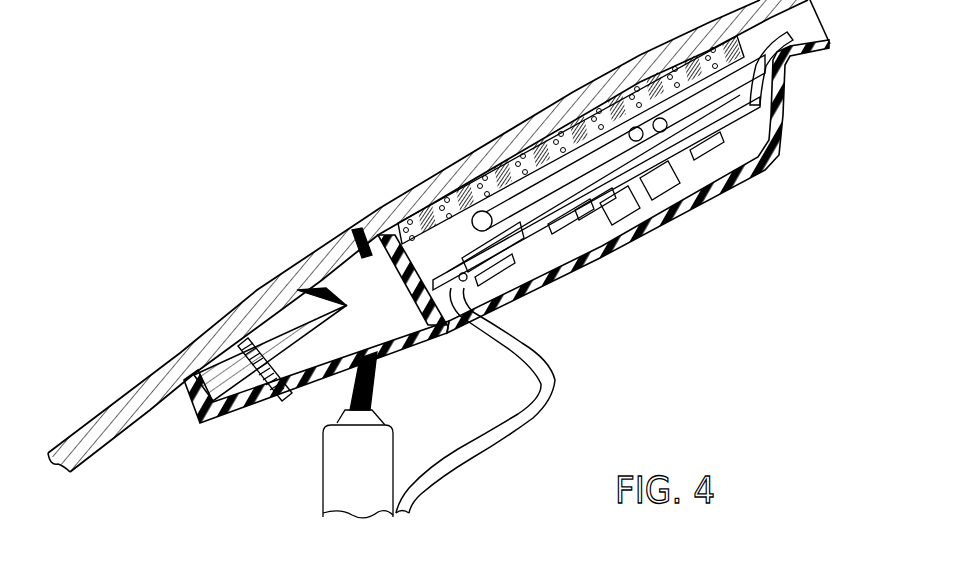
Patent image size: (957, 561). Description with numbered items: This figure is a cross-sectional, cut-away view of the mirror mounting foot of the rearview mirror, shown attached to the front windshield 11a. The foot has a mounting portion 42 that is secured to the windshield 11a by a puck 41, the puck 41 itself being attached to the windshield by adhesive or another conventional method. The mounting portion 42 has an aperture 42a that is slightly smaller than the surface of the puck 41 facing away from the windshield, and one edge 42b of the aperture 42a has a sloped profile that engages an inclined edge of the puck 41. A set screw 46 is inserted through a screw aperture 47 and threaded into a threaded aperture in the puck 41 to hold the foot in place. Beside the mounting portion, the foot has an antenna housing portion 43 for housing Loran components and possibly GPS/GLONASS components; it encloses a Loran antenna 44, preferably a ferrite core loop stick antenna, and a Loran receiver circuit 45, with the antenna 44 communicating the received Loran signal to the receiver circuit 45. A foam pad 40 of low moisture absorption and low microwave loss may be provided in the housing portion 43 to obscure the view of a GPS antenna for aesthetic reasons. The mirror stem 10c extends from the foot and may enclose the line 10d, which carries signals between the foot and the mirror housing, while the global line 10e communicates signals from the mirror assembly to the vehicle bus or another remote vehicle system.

The front windshield 11a is at (180, 358).
The aperture 42a is at (197, 372).
The puck 41 is at (277, 330).
The edge 42b is at (300, 300).
The foam pad 40 is at (437, 205).
The global line 10e is at (775, 58).
The antenna housing portion 43 is at (747, 203).
The Loran receiver circuit 45 is at (590, 200).
The Loran antenna 44 is at (531, 205).
The mounting portion 42 is at (393, 368).
The set screw 46 is at (238, 413).
The screw aperture 47 is at (288, 403).
The mirror stem 10c is at (333, 493).
The line 10d is at (412, 497).